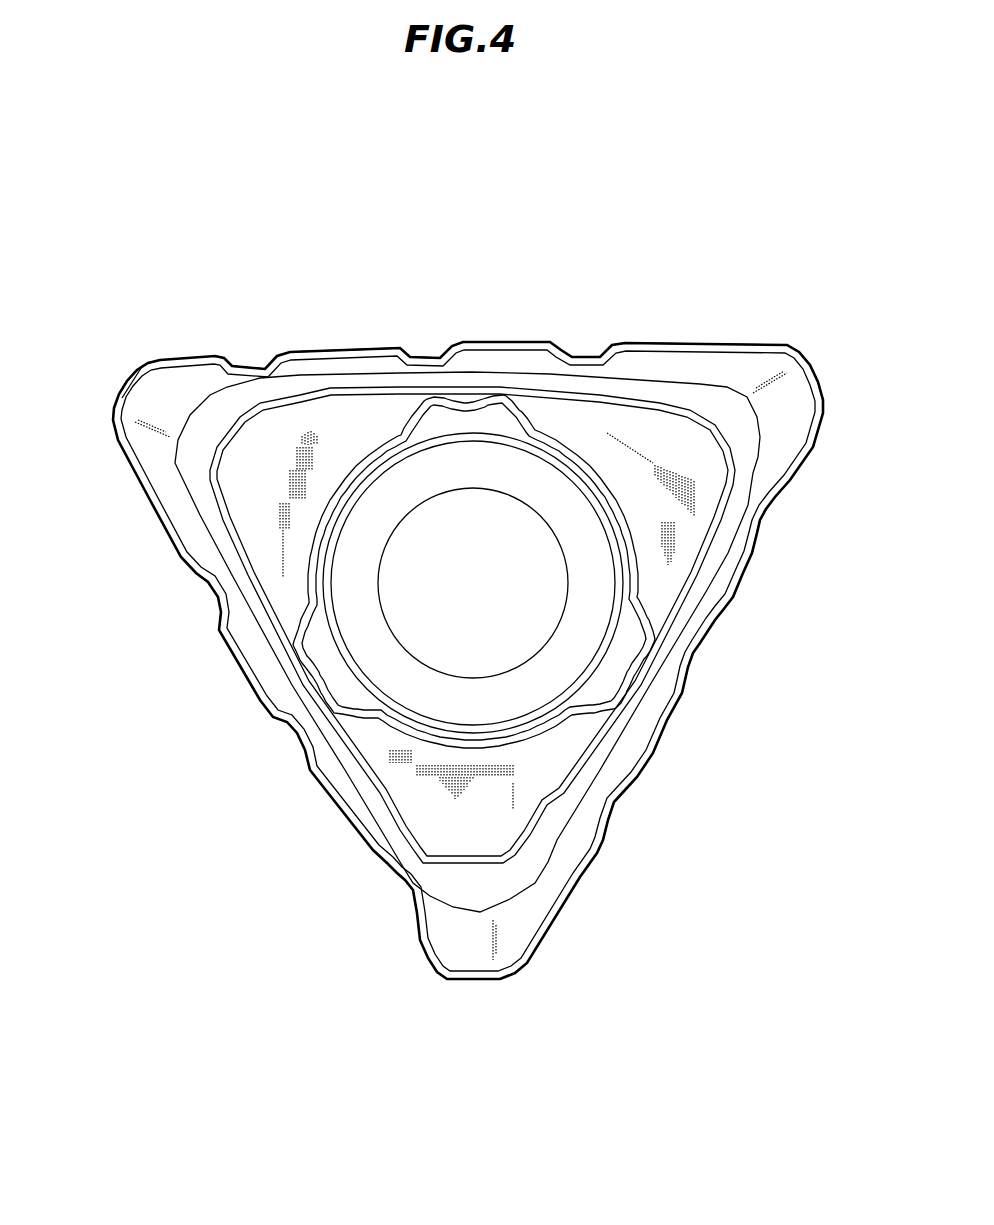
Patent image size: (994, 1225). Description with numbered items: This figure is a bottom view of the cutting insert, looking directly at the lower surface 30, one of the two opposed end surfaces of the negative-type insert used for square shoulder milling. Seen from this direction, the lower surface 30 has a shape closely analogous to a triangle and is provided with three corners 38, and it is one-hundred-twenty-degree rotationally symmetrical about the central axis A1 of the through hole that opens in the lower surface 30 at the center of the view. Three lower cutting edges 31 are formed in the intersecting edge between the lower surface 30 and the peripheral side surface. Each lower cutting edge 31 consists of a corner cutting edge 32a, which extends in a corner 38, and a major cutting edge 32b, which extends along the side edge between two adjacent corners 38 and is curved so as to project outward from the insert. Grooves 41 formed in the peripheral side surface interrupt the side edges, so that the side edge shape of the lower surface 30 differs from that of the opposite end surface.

The lower surface 30 is at (488, 822).
The lower cutting edge 31 is at (500, 330).
The corner cutting edge 32a is at (467, 422).
The major cutting edge 32b is at (680, 345).
The corner 38 is at (117, 408).
The groove 41 is at (258, 360).
The central axis A1 is at (470, 580).